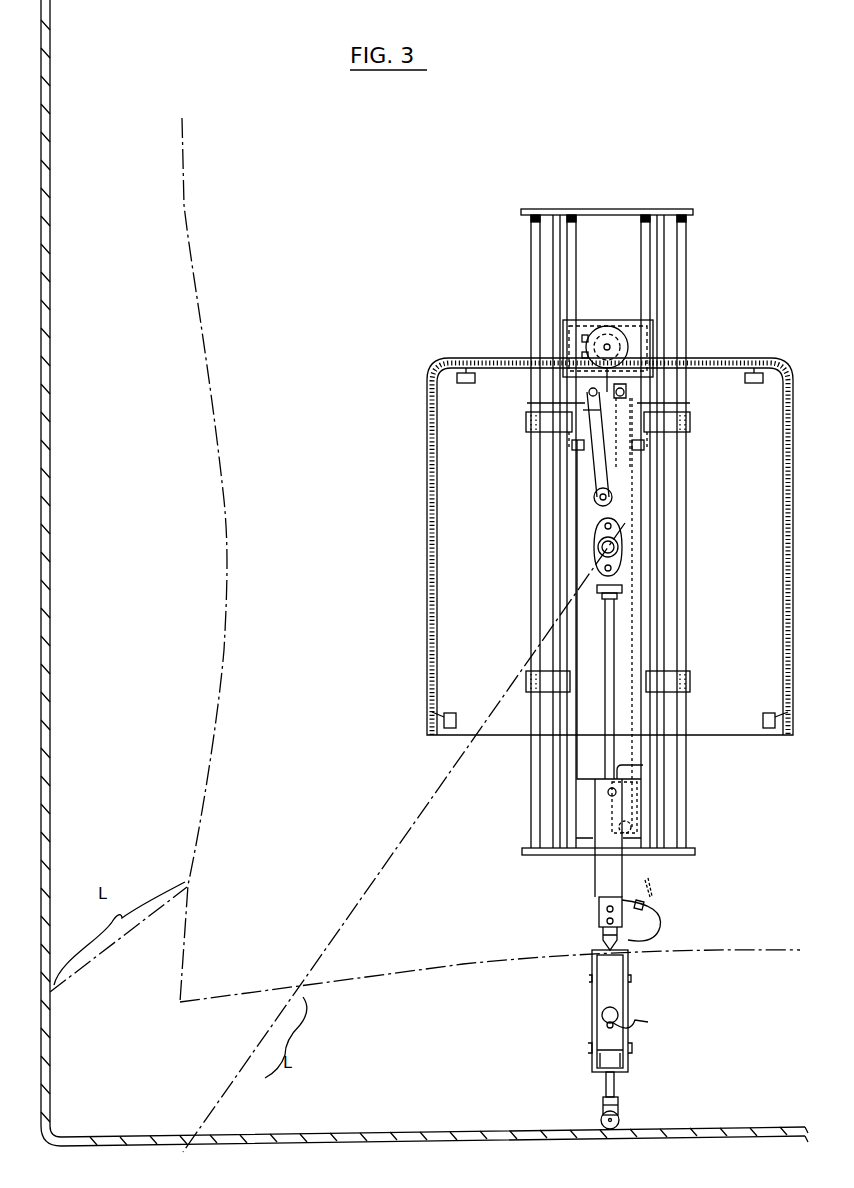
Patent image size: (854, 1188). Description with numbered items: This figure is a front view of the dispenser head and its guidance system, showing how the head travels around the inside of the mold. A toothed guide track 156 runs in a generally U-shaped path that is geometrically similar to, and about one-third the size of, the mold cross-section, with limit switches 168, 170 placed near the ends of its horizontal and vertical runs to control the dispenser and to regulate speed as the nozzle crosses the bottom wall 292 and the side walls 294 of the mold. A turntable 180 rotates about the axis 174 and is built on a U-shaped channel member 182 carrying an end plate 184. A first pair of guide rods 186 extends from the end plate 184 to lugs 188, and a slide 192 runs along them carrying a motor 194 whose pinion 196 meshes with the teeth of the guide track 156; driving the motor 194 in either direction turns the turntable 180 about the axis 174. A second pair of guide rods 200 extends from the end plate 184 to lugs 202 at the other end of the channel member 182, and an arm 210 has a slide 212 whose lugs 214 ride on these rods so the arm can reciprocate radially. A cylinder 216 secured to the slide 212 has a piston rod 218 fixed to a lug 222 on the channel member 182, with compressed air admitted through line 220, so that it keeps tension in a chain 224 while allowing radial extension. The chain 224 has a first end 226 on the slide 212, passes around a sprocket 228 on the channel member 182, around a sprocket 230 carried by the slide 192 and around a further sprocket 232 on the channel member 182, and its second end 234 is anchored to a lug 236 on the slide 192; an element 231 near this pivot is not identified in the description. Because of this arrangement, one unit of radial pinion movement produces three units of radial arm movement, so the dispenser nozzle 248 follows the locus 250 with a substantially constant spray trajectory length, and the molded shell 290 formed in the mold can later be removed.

The guide track 156 is at (500, 358).
The limit switch 168 is at (455, 713).
The limit switch 170 is at (467, 384).
The axis 174 is at (615, 548).
The turntable 180 is at (583, 528).
The U-shaped channel member 182 is at (662, 246).
The end plate 184 is at (669, 209).
The guide rods 186 is at (642, 262).
The lugs 188 is at (572, 446).
The slide 192 is at (655, 330).
The motor 194 is at (613, 335).
The pinion 196 is at (606, 330).
The second pair of guide rods 200 is at (531, 547).
The lugs 202 is at (537, 856).
The arm 210 is at (607, 954).
The slide 212 is at (577, 797).
The lugs 214 is at (526, 420).
The cylinder 216 is at (624, 874).
The piston rod 218 is at (612, 652).
The line 220 is at (688, 797).
The lug 222 is at (622, 588).
The chain 224 is at (618, 604).
The first end of chain 226 is at (625, 770).
The sprocket 228 is at (632, 827).
The sprocket 230 is at (655, 403).
The pivot pin 231 is at (626, 390).
The sprocket 232 is at (594, 497).
The second end of chain 234 is at (588, 409).
The lug 236 is at (589, 390).
The dispenser nozzle 248 is at (600, 931).
The locus 250 is at (442, 968).
The molded shell 290 is at (52, 681).
The bottom wall 292 is at (426, 1134).
The side walls 294 is at (52, 745).